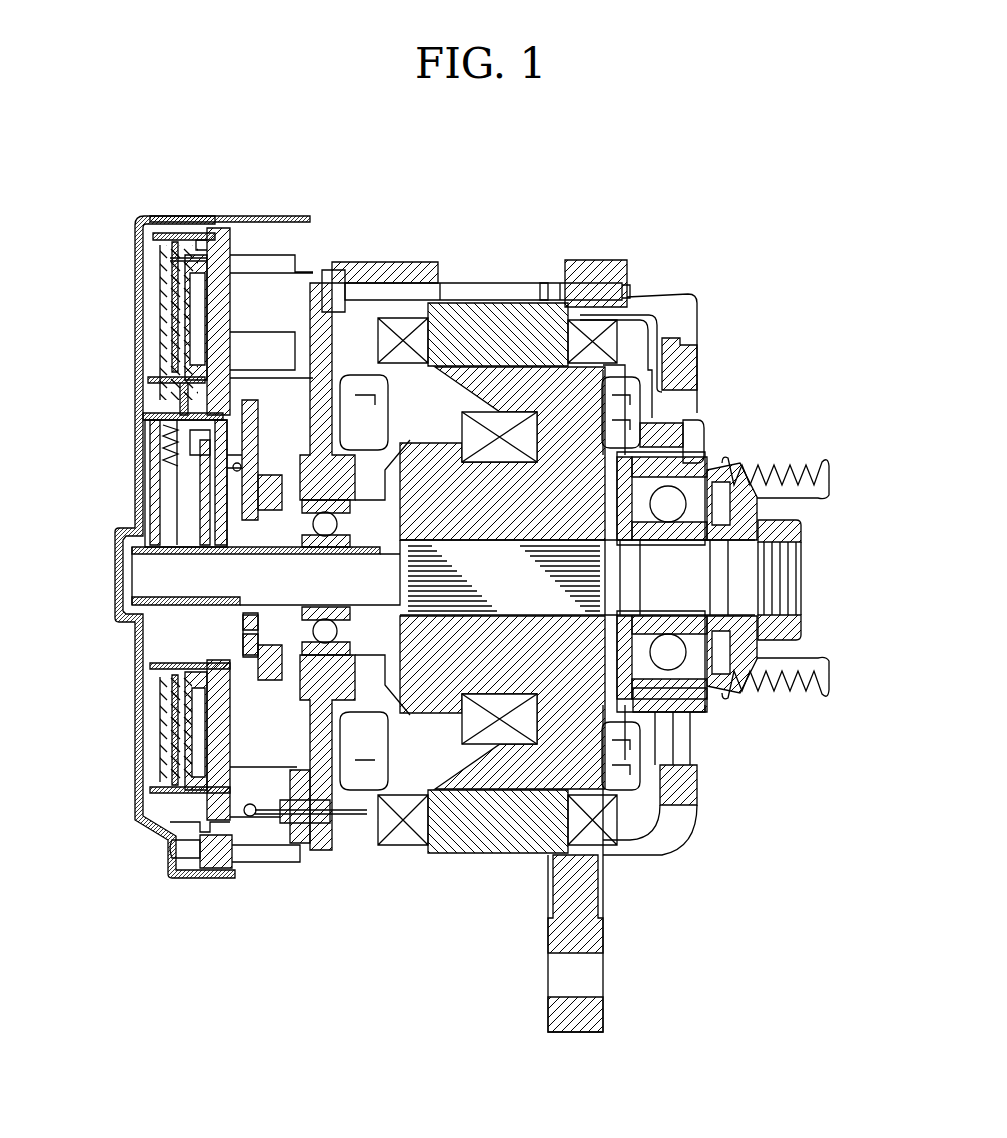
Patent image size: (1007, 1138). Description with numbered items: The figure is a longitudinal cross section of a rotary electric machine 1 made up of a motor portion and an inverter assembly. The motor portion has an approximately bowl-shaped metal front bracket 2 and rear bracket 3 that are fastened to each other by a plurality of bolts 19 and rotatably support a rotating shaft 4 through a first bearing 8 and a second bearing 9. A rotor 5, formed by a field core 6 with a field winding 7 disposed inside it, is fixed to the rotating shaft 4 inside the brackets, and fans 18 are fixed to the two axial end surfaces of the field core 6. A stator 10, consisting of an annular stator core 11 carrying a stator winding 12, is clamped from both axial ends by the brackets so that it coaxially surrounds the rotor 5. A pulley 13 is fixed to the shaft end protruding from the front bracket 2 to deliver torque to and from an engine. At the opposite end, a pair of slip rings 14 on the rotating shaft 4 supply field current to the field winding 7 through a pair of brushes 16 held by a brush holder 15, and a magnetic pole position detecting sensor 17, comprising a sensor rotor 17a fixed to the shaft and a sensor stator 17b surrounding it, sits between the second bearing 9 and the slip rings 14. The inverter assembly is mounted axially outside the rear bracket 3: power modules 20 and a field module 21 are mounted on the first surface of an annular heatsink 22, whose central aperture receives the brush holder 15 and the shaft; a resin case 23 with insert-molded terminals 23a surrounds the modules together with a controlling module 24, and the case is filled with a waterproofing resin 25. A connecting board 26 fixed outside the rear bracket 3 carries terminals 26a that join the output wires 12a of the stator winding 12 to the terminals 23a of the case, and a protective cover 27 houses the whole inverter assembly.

The rotary electric machine 1 is at (142, 129).
The front bracket 2 is at (655, 297).
The rear bracket 3 is at (360, 262).
The rotating shaft 4 is at (750, 580).
The rotor 5 is at (528, 912).
The field core 6 is at (525, 770).
The field winding 7 is at (492, 745).
The first bearing 8 is at (705, 465).
The second bearing 9 is at (322, 502).
The stator 10 is at (495, 203).
The stator core 11 is at (480, 318).
The stator winding 12 is at (410, 320).
The output wires 12a is at (366, 815).
The pulley 13 is at (788, 470).
The slip rings 14 is at (205, 545).
The brush holder 15 is at (175, 438).
The brushes 16 is at (203, 495).
The magnetic pole position detecting sensor 17 is at (50, 648).
The sensor rotor 17a is at (250, 622).
The sensor stator 17b is at (252, 650).
The fans 18 is at (352, 775).
The bolts 19 is at (527, 284).
The power modules 20 is at (198, 715).
The field module 21 is at (195, 290).
The heatsink 22 is at (212, 232).
The case 23 is at (160, 234).
The terminals 23a is at (192, 826).
The controlling module 24 is at (165, 305).
The waterproofing resin 25 is at (165, 340).
The connecting board 26 is at (300, 845).
The terminals 26a is at (208, 880).
The protective cover 27 is at (272, 216).